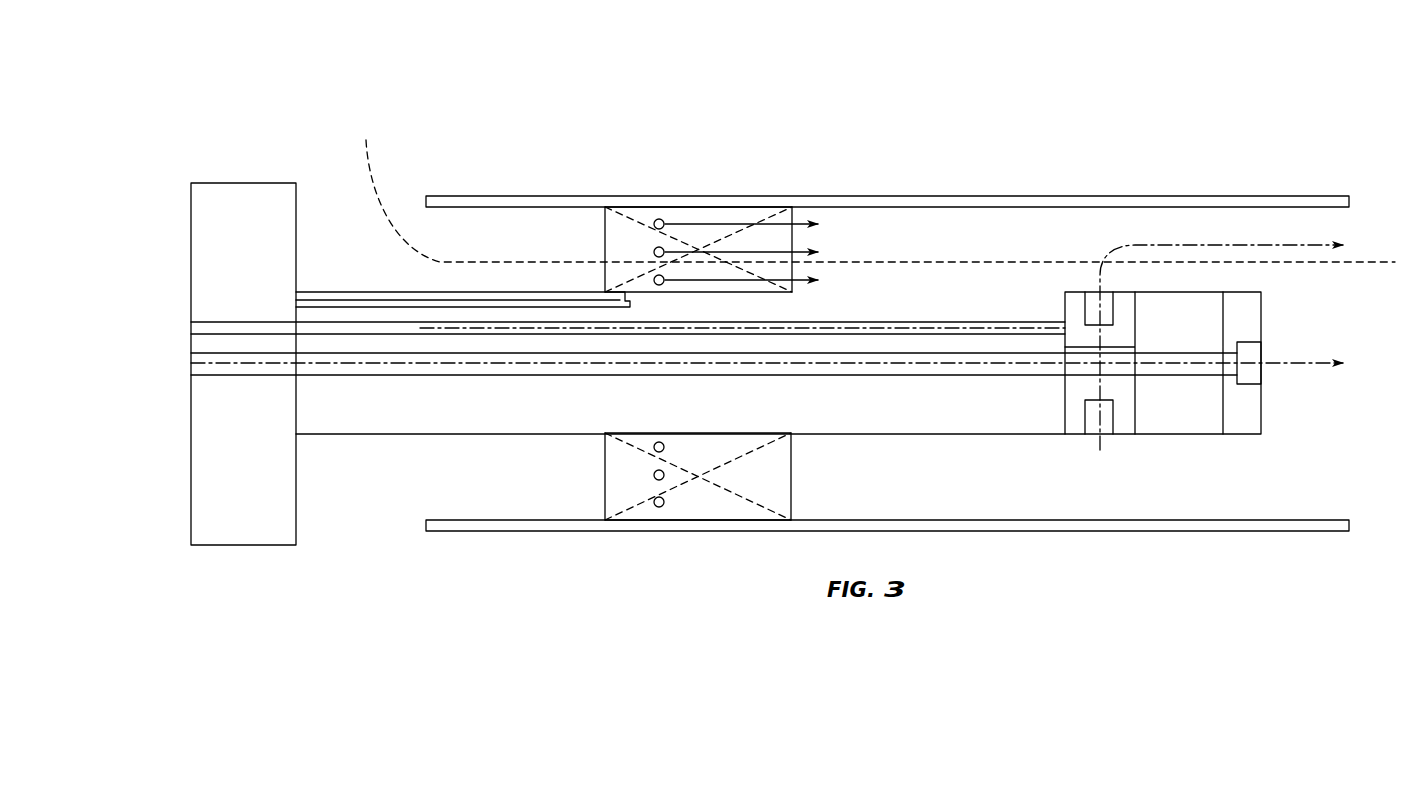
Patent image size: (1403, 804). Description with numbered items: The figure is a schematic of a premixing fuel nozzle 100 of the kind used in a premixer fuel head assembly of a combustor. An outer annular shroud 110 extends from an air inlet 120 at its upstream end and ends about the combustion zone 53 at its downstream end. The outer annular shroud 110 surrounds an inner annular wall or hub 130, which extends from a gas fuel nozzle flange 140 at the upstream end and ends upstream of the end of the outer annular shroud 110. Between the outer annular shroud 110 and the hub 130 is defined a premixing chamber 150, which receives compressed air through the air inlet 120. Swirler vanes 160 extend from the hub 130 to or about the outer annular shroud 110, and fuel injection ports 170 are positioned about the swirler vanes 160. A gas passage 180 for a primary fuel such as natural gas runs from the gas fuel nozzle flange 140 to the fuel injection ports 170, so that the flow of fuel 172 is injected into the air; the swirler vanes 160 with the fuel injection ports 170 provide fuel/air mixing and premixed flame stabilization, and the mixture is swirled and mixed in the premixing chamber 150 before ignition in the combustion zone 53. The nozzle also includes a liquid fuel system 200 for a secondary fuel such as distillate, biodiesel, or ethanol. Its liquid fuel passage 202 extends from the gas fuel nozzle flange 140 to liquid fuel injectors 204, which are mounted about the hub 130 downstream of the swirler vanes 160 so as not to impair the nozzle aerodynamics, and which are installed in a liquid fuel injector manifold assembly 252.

The premixing fuel nozzle 100 is at (1137, 68).
The outer annular shroud 110 is at (861, 195).
The air inlet 120 is at (348, 160).
The hub 130 is at (1210, 434).
The gas fuel nozzle flange 140 is at (220, 545).
The premixing chamber 150 is at (964, 251).
The swirler vanes 160 is at (792, 474).
The fuel injection ports 170 is at (652, 475).
The flow of fuel 172 is at (296, 301).
The gas passage 180 is at (400, 298).
The liquid fuel system 200 is at (190, 329).
The liquid fuel passage 202 is at (696, 353).
The liquid fuel injectors 204 is at (1093, 294).
The liquid fuel injector manifold assembly 252 is at (1122, 325).
The combustion zone 53 is at (1366, 446).